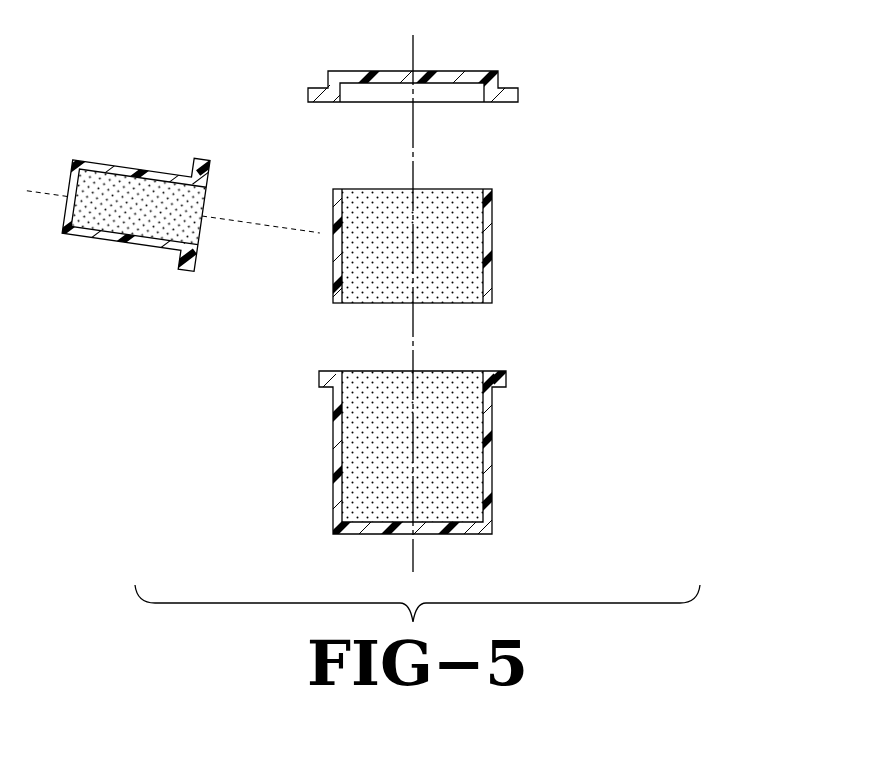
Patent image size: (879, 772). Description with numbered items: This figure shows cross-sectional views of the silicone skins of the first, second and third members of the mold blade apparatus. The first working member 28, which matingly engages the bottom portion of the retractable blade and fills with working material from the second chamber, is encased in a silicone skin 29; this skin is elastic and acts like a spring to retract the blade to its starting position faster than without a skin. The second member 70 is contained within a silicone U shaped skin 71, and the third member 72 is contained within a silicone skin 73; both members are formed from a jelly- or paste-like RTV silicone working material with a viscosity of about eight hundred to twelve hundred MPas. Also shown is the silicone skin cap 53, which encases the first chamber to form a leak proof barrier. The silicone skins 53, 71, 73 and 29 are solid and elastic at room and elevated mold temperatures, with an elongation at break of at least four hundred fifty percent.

The silicone skin cap 53 is at (443, 71).
The third member 72 is at (438, 202).
The silicone skin 73 is at (487, 235).
The second member 70 is at (442, 378).
The silicone U shaped skin 71 is at (488, 410).
The first working member 28 is at (156, 195).
The silicone skin 29 is at (110, 168).